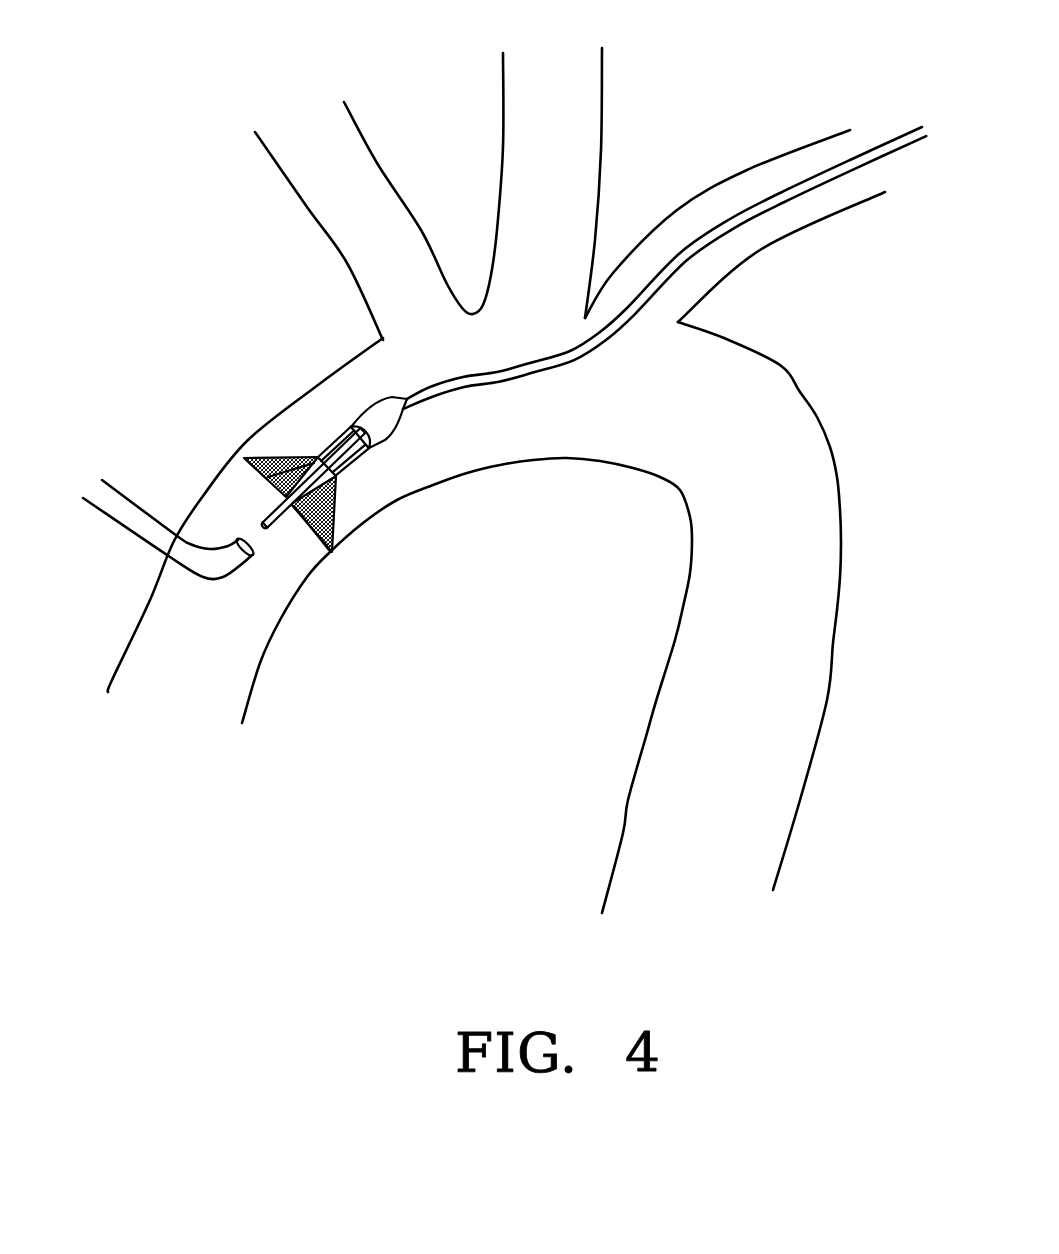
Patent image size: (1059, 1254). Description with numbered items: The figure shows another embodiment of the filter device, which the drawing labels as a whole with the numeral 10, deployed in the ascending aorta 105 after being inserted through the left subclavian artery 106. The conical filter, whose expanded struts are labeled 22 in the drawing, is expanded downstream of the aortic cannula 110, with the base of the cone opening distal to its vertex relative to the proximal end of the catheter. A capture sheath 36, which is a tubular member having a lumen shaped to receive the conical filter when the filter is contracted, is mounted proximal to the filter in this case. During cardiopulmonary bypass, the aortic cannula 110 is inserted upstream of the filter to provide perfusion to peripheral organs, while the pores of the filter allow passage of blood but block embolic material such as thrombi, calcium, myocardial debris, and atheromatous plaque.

The intravascular device / filter system 10 is at (745, 228).
The filter struts (expandable filter) 22 is at (282, 458).
The capture sheath 36 is at (348, 420).
The ascending aorta 105 is at (212, 490).
The left subclavian artery 106 is at (748, 172).
The aortic cannula 110 is at (130, 533).